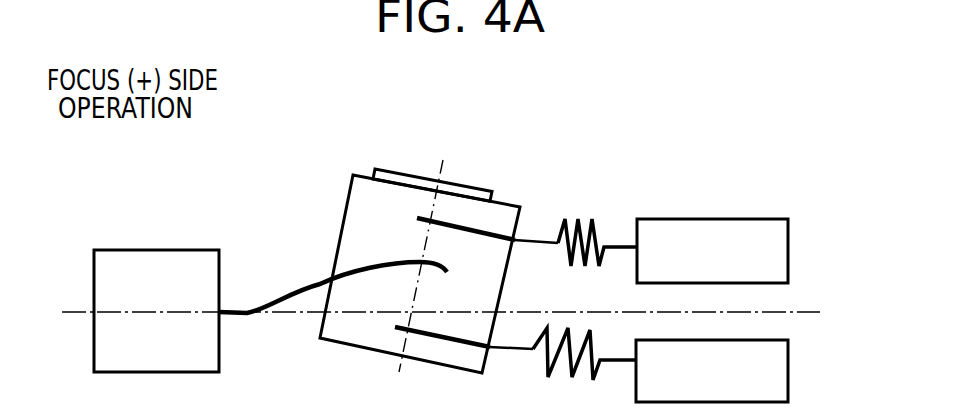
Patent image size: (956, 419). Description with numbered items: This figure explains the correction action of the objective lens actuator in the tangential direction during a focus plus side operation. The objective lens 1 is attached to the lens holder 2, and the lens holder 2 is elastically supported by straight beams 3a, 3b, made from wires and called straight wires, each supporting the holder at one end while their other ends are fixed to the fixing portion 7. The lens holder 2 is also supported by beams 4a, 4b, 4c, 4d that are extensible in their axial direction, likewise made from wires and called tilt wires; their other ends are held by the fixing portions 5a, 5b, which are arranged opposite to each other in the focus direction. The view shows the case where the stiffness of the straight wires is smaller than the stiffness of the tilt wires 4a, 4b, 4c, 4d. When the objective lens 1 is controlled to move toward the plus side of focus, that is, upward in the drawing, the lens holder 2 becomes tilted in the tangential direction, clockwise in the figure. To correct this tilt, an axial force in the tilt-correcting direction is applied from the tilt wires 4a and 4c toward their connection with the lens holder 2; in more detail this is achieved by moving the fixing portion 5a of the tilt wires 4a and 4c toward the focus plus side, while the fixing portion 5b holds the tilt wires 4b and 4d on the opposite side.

The objective lens 1 is at (380, 170).
The lens holder 2 is at (353, 227).
The straight beam 3a is at (319, 253).
The straight beam 3b is at (307, 285).
The beam extensible in the axial direction 4a is at (476, 214).
The beam extensible in the axial direction 4b is at (608, 229).
The beam extensible in the axial direction 4c is at (523, 350).
The beam extensible in the axial direction 4d is at (527, 350).
The fixing portion 5a is at (698, 250).
The fixing portion 5b is at (767, 350).
The fixing portion 7 is at (137, 258).